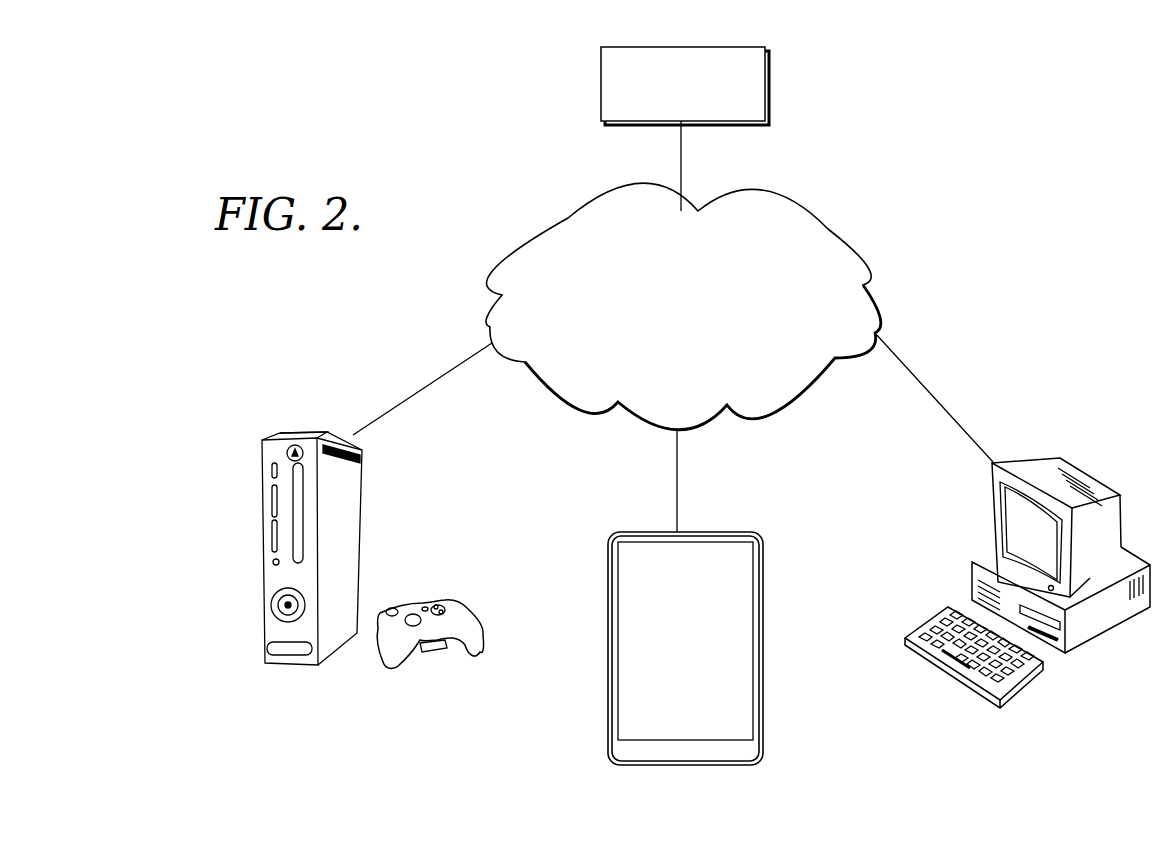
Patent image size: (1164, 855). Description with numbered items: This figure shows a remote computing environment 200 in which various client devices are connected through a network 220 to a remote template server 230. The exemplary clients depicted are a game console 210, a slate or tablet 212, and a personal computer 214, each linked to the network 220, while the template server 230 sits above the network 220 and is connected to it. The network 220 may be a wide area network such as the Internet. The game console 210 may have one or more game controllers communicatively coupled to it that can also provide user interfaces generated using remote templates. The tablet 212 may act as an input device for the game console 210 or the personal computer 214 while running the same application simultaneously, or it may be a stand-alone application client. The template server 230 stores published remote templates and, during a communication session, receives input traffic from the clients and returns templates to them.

The remote computing environment 200 is at (938, 153).
The game console 210 is at (362, 483).
The tablet 212 is at (763, 635).
The personal computer 214 is at (1090, 470).
The network 220 is at (760, 190).
The template server 230 is at (726, 46).